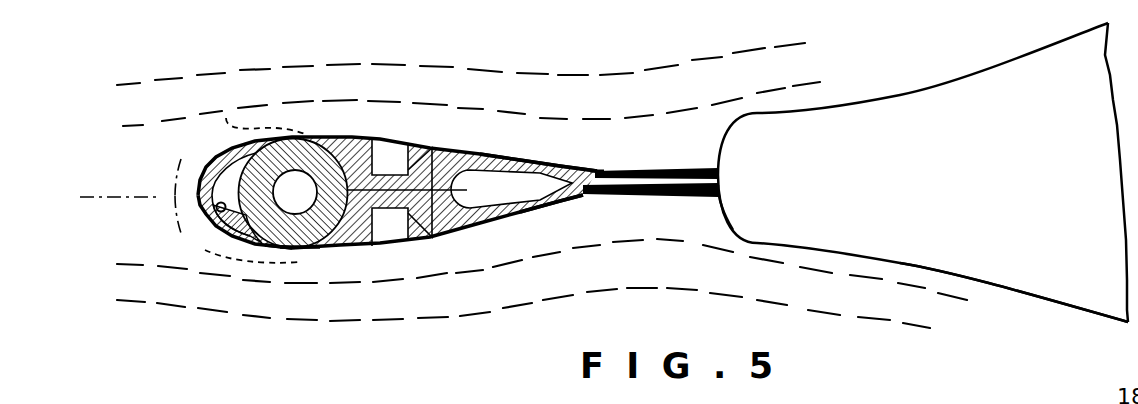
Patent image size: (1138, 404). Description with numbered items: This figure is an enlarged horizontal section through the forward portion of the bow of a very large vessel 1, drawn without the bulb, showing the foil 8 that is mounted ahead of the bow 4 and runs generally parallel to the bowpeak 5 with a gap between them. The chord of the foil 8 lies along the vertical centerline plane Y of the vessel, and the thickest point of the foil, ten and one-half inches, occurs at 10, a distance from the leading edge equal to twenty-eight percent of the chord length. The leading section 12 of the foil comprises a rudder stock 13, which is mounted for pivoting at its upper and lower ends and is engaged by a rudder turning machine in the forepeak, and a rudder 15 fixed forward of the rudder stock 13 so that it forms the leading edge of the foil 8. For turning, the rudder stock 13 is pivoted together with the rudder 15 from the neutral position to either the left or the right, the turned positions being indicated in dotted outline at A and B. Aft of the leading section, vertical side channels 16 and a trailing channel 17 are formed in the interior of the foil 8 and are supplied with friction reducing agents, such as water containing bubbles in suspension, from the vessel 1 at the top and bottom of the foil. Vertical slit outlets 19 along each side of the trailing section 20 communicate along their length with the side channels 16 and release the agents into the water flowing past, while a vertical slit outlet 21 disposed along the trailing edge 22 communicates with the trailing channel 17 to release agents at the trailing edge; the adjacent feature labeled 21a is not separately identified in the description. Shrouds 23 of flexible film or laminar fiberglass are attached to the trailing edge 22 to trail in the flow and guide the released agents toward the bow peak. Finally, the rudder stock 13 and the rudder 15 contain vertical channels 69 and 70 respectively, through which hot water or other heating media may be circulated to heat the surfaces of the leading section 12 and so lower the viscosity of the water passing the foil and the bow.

The vessel 1 is at (987, 271).
The bow 4 is at (773, 195).
The bowpeak 5 is at (717, 210).
The foil 8 is at (352, 137).
The thickest point of the foil 10 is at (297, 250).
The leading section 12 is at (285, 250).
The rudder stock 13 is at (292, 138).
The rudder 15 is at (228, 118).
The vertical side channels 16 is at (382, 149).
The trailing channel 17 is at (507, 198).
The vertical slit outlets 19 is at (432, 148).
The trailing section 20 is at (525, 165).
The vertical slit outlet 21 is at (614, 194).
The lower wall end 21a is at (567, 203).
The trailing edge 22 is at (596, 172).
The shrouds 23 is at (674, 169).
The rudder stock channel 69 is at (303, 207).
The rudder channel 70 is at (229, 232).
The turned rudder position A is at (200, 232).
The turned rudder position B is at (200, 158).
The vertical centerline plane Y is at (111, 197).